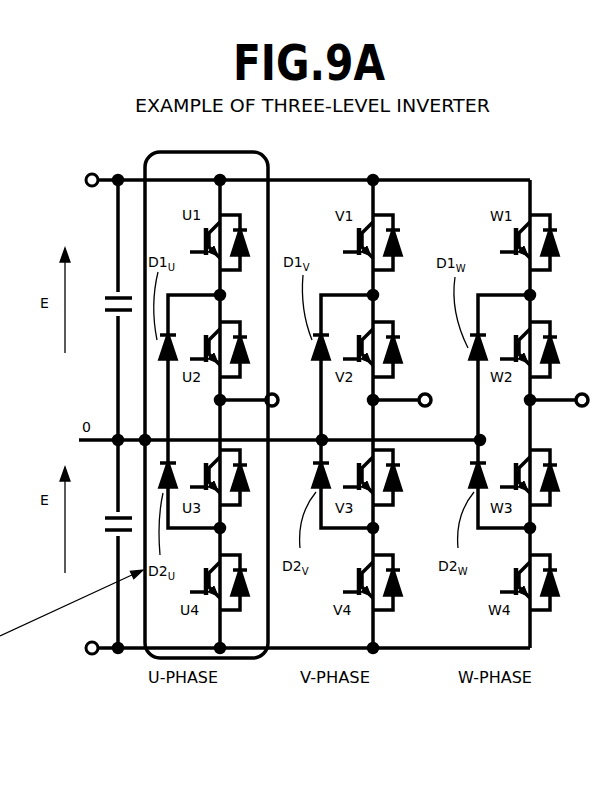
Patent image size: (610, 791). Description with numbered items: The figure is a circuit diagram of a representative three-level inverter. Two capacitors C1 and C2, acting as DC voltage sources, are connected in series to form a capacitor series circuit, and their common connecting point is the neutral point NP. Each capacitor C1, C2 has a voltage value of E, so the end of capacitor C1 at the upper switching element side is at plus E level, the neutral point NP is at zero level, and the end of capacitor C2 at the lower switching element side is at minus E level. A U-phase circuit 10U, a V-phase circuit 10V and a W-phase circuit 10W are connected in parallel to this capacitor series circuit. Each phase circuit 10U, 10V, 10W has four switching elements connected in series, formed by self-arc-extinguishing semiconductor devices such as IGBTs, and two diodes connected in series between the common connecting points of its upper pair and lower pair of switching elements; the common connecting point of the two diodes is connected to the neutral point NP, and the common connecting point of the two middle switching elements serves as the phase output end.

The U-phase circuit 10U is at (238, 670).
The V-phase circuit 10V is at (393, 660).
The W-phase circuit 10W is at (543, 647).
The capacitor C1 is at (107, 293).
The capacitor C2 is at (107, 513).
The neutral point NP is at (110, 443).